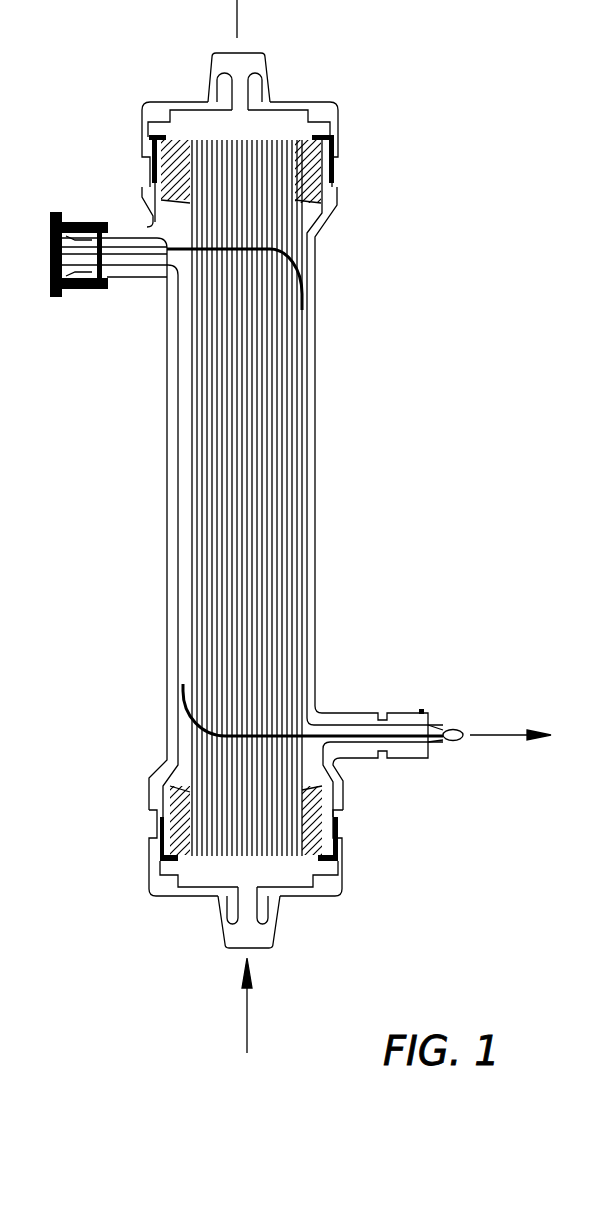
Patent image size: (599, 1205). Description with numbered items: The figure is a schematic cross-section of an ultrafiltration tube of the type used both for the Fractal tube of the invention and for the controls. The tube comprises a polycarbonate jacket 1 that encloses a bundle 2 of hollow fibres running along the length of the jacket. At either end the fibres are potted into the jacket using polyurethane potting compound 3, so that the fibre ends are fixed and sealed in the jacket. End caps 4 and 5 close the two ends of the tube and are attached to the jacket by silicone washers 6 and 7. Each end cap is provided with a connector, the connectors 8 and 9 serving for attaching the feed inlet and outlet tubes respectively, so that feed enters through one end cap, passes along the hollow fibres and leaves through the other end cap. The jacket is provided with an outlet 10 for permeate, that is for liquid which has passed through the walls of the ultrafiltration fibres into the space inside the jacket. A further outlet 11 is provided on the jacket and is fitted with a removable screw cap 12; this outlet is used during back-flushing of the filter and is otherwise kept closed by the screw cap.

The polycarbonate jacket 1 is at (317, 477).
The bundle of hollow fibres 2 is at (272, 427).
The polyurethane potting compound 3 is at (318, 200).
The end cap 4 is at (342, 897).
The end cap 5 is at (335, 108).
The silicone washer 6 is at (343, 848).
The silicone washer 7 is at (335, 170).
The connector 8 is at (220, 944).
The connector 9 is at (272, 80).
The outlet for permeate 10 is at (407, 713).
The outlet 11 is at (118, 225).
The removable screw cap 12 is at (77, 290).